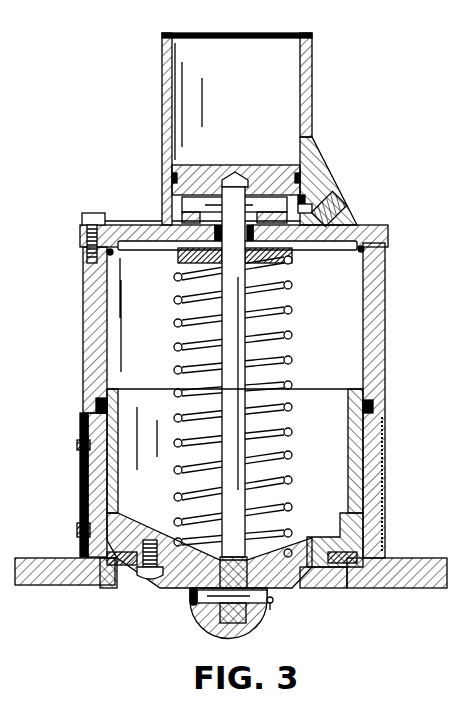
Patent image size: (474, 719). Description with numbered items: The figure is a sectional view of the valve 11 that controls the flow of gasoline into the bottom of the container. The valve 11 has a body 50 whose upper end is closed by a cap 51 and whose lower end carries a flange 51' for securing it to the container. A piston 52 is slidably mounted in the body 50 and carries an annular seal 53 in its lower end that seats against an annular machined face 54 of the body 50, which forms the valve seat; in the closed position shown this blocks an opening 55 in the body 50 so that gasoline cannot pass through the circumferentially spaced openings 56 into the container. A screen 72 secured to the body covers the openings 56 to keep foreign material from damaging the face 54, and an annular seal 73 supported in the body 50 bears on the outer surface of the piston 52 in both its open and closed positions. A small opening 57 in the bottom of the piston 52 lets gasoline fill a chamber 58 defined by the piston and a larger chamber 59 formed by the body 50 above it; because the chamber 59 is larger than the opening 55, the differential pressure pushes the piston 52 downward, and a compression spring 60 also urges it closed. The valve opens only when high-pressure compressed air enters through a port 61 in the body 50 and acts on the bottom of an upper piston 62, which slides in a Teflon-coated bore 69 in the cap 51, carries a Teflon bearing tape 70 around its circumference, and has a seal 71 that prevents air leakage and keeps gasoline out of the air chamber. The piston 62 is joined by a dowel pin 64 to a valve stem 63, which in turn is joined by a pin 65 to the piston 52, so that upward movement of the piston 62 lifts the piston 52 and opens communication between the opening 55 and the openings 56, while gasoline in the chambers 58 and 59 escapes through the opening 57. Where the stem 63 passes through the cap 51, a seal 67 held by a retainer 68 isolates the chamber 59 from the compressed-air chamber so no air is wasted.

The valve 11 is at (424, 354).
The body 50 is at (388, 388).
The cap 51 is at (234, 219).
The flange 51' is at (244, 559).
The piston 52 is at (349, 425).
The annular seal 53 is at (335, 585).
The annular machined face 54 is at (352, 566).
The opening 55 is at (127, 578).
The circumferentially spaced openings 56 is at (380, 430).
The small opening 57 is at (291, 584).
The chamber 58 is at (331, 479).
The chamber 59 is at (336, 339).
The compression spring 60 is at (174, 277).
The port 61 is at (345, 203).
The piston 62 is at (278, 163).
The valve stem 63 is at (177, 313).
The dowel pin 64 is at (197, 203).
The pin 65 is at (203, 605).
The seal 67 is at (318, 247).
The retainer 68 is at (277, 264).
The bore 69 is at (301, 75).
The Teflon bearing tape 70 is at (306, 207).
The seal 71 is at (303, 197).
The screen 72 is at (86, 496).
The annular seal 73 is at (366, 417).